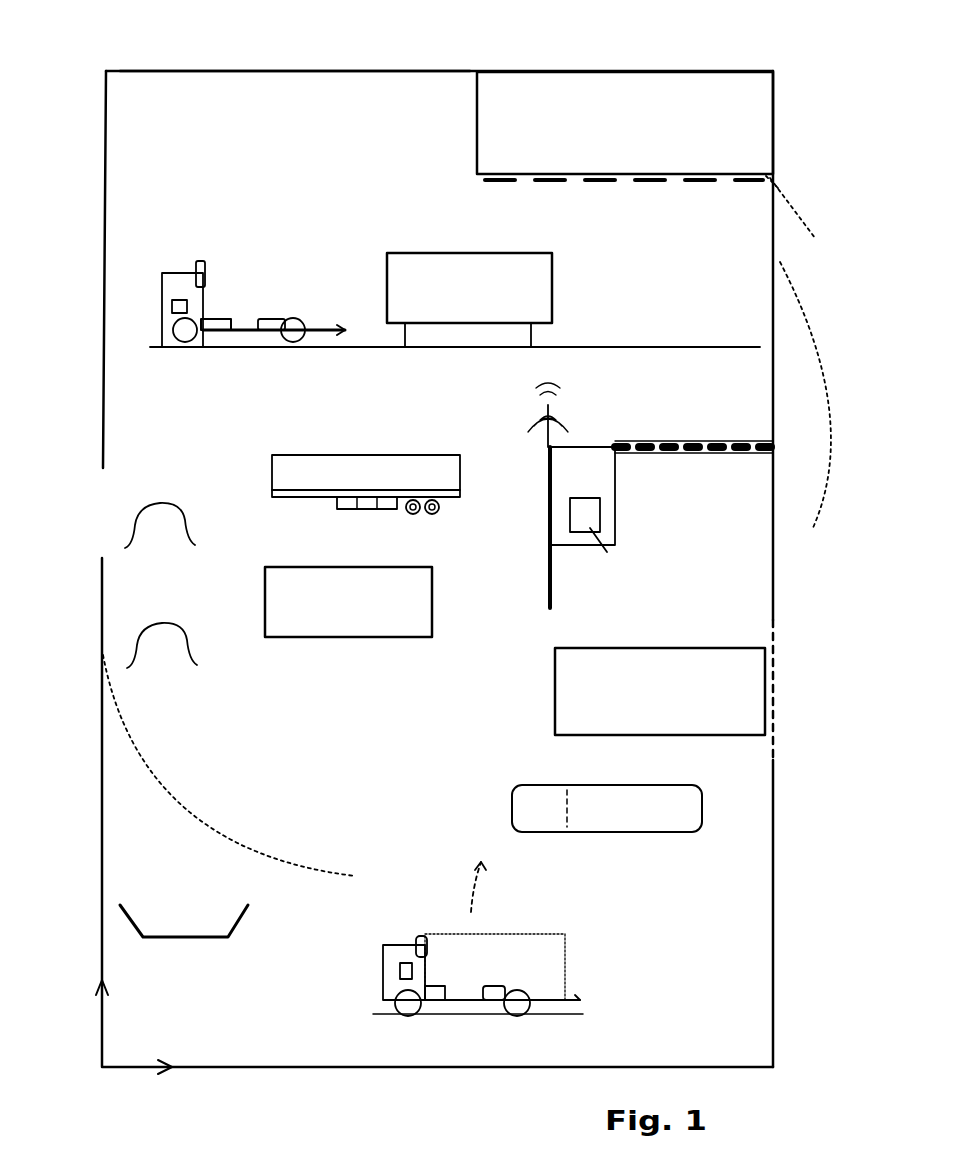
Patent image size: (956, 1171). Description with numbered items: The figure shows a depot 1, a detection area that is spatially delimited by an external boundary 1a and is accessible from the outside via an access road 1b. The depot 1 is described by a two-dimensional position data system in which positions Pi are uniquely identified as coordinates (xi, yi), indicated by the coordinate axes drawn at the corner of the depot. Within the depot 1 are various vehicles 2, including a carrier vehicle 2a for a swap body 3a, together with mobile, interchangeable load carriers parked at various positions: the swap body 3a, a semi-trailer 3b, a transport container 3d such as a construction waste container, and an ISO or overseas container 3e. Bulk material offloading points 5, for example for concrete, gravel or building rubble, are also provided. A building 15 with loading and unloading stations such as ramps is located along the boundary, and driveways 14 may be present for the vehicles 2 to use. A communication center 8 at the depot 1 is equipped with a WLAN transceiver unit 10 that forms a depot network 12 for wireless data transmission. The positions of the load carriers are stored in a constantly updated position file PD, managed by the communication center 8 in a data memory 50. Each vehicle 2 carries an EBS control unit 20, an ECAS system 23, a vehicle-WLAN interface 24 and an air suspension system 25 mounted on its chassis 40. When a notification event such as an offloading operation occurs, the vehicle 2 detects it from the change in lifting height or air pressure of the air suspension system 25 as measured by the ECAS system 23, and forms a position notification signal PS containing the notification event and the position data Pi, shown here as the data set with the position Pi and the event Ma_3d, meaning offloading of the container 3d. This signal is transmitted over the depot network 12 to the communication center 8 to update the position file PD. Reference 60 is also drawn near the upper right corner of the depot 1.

The depot 1 is at (127, 72).
The boundary 1a is at (286, 70).
The access road 1b is at (773, 678).
The vehicles 2 is at (383, 996).
The carrier vehicle 2a is at (178, 348).
The swap body 3a is at (552, 263).
The semi-trailer 3b is at (432, 455).
The transport container 3d is at (240, 922).
The ISO container 3e is at (290, 633).
The bulk material offloading point 5 is at (135, 540).
The communication center 8 is at (583, 548).
The WLAN transceiver unit 10 is at (553, 447).
The depot network 12 is at (176, 790).
The driveways 14 is at (678, 345).
The building 15 is at (477, 108).
The EBS control unit 20 is at (172, 303).
The ECAS system 23 is at (218, 330).
The vehicle-WLAN interface 24 is at (198, 262).
The air suspension system 25 is at (283, 318).
The chassis 40 is at (248, 330).
The data memory 50 is at (588, 525).
The site boundary region 60 is at (752, 62).
The position file PD is at (607, 552).
The position notification signal PS is at (525, 835).
The position data Pi is at (140, 1047).